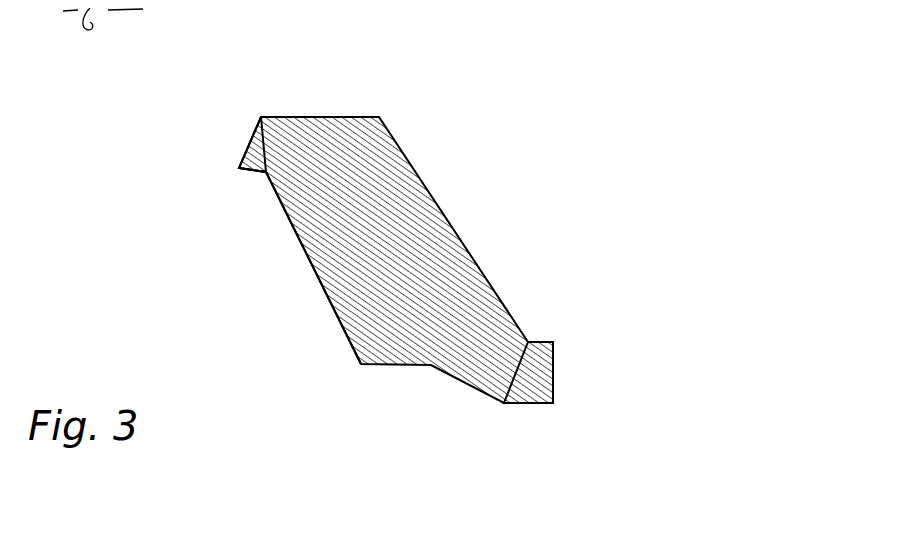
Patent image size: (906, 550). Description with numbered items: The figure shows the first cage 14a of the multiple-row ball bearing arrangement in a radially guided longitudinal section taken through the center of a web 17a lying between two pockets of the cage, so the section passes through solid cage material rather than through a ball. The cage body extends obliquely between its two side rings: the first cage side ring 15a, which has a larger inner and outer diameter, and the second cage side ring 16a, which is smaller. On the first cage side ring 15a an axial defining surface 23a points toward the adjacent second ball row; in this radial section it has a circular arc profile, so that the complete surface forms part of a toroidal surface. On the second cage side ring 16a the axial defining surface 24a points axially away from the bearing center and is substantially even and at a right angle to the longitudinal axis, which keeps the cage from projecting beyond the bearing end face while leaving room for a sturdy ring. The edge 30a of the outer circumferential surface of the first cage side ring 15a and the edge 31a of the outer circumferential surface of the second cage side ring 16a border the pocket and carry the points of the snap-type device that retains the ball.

The first cage 14a is at (480, 212).
The axial defining surface 23a is at (241, 146).
The axial defining surface 24a is at (552, 366).
The first cage side ring 15a is at (260, 167).
The second cage side ring 16a is at (553, 403).
The web 17a is at (322, 281).
The edge 30a is at (381, 110).
The edge 31a is at (534, 333).